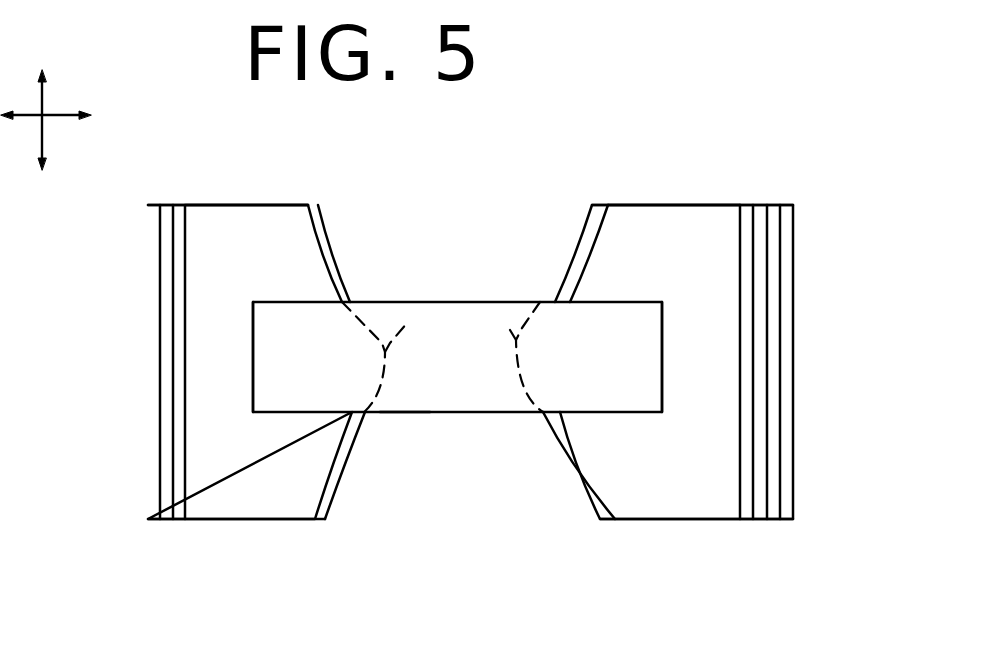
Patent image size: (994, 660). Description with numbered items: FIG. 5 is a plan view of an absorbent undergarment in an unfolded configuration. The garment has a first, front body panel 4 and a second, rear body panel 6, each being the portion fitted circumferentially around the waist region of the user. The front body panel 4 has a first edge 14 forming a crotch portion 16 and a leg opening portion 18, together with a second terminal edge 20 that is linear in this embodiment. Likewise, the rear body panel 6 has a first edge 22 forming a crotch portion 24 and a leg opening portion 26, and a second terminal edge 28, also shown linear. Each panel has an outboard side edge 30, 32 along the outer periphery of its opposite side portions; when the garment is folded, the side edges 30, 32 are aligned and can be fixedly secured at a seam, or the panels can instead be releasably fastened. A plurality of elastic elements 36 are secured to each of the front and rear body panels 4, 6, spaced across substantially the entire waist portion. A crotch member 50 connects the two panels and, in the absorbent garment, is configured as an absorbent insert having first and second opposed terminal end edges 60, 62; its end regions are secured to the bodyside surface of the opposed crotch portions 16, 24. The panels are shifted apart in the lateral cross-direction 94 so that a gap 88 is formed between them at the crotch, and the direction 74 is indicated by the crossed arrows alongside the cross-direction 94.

The front body panel 4 is at (262, 270).
The rear body panel 6 is at (675, 272).
The first edge 14 is at (352, 302).
The crotch portion 16 is at (412, 330).
The leg opening portion 18 is at (330, 242).
The second terminal edge 20 is at (150, 438).
The first edge 22 is at (562, 272).
The crotch portion 24 is at (494, 323).
The leg opening portion 26 is at (585, 222).
The second terminal edge 28 is at (788, 366).
The outboard side edge 30 is at (228, 205).
The outboard side edge 32 is at (665, 205).
The elastic elements 36 is at (153, 292).
The crotch member 50 is at (473, 383).
The first terminal end edge 60 is at (252, 370).
The second terminal end edge 62 is at (663, 371).
The transverse direction 74 is at (82, 110).
The gap 88 is at (402, 398).
The lateral cross-direction 94 is at (45, 100).